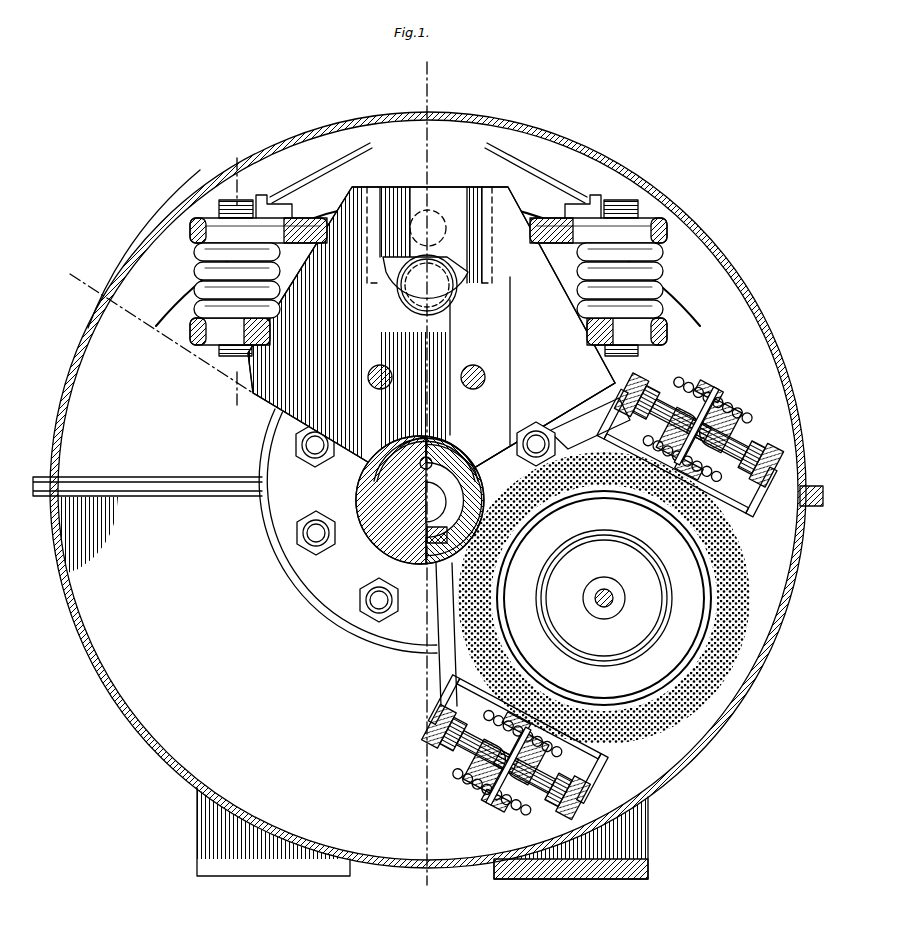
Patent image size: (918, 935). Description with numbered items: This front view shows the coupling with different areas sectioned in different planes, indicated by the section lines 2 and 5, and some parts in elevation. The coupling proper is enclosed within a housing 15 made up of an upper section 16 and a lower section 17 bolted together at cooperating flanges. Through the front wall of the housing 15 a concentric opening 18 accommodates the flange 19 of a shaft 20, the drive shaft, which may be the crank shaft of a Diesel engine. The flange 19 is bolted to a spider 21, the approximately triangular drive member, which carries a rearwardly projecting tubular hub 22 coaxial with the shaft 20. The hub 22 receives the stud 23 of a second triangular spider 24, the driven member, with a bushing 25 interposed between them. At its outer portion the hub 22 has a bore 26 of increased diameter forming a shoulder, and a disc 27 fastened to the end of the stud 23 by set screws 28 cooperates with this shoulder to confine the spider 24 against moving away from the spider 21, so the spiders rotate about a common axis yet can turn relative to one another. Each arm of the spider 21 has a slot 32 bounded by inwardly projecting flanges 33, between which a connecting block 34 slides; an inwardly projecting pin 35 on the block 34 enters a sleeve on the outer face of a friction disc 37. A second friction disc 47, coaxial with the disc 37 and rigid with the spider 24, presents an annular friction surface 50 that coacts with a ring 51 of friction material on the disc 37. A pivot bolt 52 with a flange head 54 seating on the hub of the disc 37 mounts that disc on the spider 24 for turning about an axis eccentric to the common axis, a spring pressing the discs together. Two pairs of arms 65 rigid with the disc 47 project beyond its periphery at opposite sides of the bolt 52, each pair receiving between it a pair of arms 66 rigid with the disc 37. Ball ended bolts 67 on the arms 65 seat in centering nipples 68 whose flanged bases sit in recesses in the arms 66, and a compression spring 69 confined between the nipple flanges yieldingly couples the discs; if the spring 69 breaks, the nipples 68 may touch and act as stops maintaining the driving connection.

The section line 2- 2 is at (414, 82).
The section line 5- 5 is at (250, 184).
The housing 15 is at (147, 751).
The upper section 16 is at (88, 328).
The lower section 17 is at (92, 648).
The concentric opening 18 is at (310, 603).
The flange 19 is at (314, 573).
The shaft 20 is at (362, 490).
The spider 21 is at (340, 468).
The tubular hub 22 is at (484, 497).
The stud 23 is at (462, 470).
The second spider 24 is at (549, 424).
The bushing 25 is at (440, 548).
The bore 26 is at (456, 442).
The disc 27 is at (412, 437).
The set screws 28 is at (433, 455).
The slot 32 is at (466, 306).
The flanges 33 is at (367, 200).
The connecting block 34 is at (400, 205).
The pin 35 is at (434, 215).
The friction disc 37 is at (482, 143).
The second friction disc 47 is at (752, 640).
The annular friction surface 50 is at (690, 676).
The ring 51 is at (735, 660).
The pivot bolt 52 is at (604, 589).
The flange head 54 is at (447, 306).
The arms 65 is at (300, 184).
The arms 66 is at (200, 229).
The ball ended bolts 67 is at (222, 204).
The centering nipples 68 is at (196, 262).
The compression spring 69 is at (196, 282).